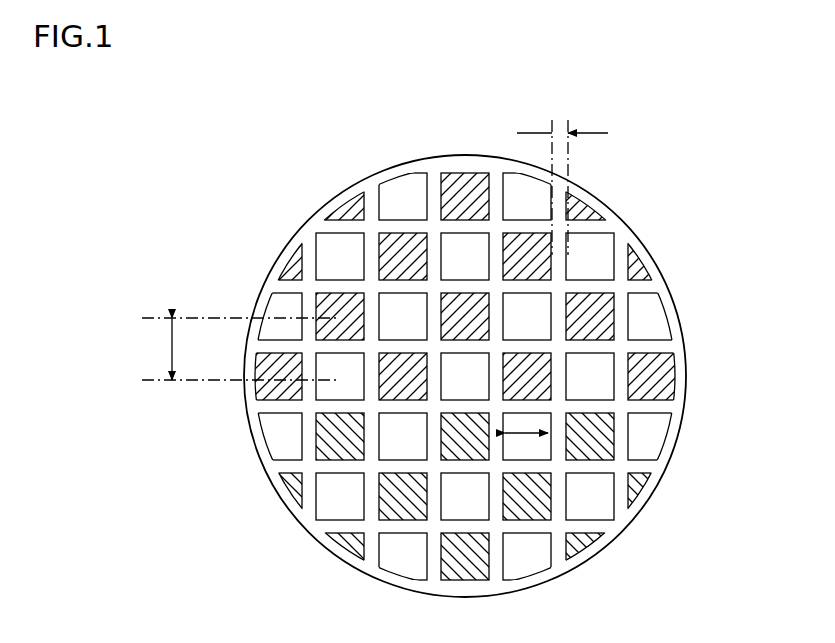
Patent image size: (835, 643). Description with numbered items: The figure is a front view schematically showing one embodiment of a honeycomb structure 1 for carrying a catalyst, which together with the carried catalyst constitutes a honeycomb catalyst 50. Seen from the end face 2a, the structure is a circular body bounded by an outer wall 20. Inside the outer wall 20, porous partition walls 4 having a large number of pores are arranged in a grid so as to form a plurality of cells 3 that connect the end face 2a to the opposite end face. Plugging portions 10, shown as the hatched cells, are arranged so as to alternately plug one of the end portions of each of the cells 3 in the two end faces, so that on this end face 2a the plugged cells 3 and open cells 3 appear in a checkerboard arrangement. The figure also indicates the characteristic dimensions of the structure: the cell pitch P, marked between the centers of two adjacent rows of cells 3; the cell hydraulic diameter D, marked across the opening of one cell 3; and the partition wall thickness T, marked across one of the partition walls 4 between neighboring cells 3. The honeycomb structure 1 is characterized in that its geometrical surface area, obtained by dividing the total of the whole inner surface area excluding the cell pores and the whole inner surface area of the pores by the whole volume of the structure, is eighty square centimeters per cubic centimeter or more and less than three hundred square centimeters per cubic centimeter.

The honeycomb structure 1 is at (437, 344).
The honeycomb catalyst 50 is at (228, 295).
The end face 2a is at (638, 223).
The outer wall 20 is at (506, 366).
The cells 3 is at (412, 248).
The partition walls 4 is at (560, 263).
The plugging portions 10 is at (335, 440).
The cell pitch P is at (241, 349).
The partition wall thickness T is at (562, 173).
The cell hydraulic diameter D is at (525, 433).